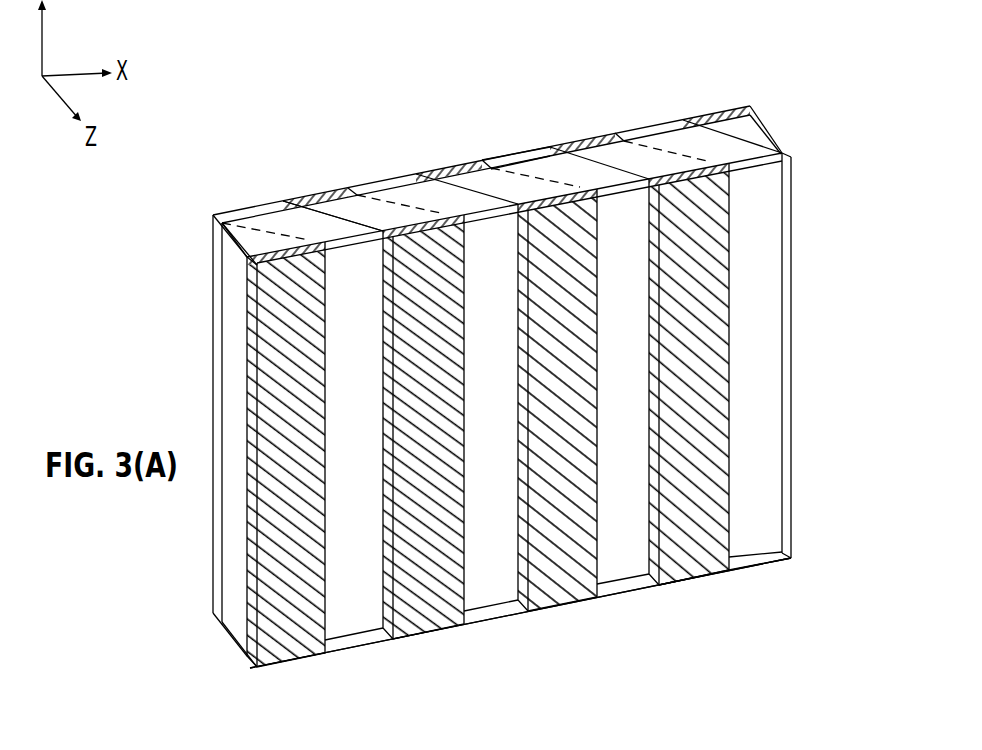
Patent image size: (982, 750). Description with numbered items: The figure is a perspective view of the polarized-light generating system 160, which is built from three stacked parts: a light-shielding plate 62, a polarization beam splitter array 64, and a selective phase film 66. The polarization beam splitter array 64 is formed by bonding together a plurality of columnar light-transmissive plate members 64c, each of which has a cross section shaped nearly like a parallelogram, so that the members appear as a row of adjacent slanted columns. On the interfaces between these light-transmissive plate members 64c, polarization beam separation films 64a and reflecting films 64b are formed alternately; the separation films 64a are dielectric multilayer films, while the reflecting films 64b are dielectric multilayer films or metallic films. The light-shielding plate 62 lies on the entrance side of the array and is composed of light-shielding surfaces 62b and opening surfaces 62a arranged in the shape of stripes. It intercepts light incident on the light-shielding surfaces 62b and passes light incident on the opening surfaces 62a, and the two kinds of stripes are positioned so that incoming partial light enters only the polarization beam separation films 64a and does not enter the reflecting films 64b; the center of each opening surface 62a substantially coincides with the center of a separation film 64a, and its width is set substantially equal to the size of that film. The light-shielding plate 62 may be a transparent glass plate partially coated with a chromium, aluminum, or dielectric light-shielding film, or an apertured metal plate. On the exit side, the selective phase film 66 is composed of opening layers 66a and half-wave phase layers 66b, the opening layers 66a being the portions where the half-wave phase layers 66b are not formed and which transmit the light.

The polarized-light generating system 160 is at (403, 82).
The light-shielding plate 62 is at (752, 107).
The opening surfaces 62a is at (519, 157).
The light-shielding surfaces 62b is at (585, 142).
The polarization beam splitter array 64 is at (770, 128).
The polarization beam separation films 64a is at (249, 229).
The reflecting films 64b is at (338, 219).
The light-transmissive plate members 64c is at (276, 224).
The selective phase film 66 is at (793, 156).
The opening layers 66a is at (770, 561).
The λ/2 phase layers 66b is at (688, 581).